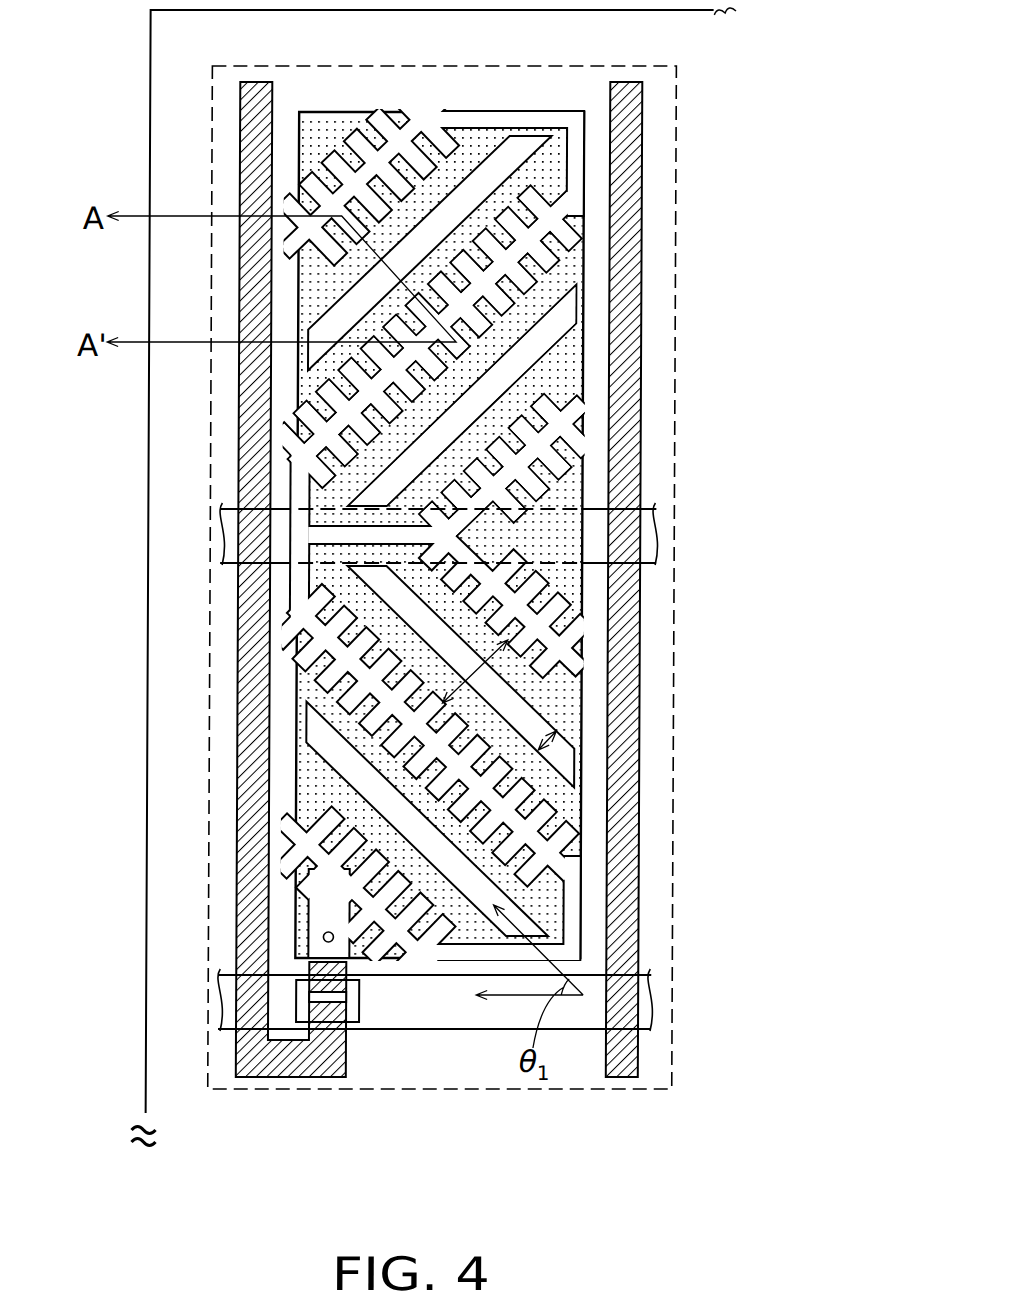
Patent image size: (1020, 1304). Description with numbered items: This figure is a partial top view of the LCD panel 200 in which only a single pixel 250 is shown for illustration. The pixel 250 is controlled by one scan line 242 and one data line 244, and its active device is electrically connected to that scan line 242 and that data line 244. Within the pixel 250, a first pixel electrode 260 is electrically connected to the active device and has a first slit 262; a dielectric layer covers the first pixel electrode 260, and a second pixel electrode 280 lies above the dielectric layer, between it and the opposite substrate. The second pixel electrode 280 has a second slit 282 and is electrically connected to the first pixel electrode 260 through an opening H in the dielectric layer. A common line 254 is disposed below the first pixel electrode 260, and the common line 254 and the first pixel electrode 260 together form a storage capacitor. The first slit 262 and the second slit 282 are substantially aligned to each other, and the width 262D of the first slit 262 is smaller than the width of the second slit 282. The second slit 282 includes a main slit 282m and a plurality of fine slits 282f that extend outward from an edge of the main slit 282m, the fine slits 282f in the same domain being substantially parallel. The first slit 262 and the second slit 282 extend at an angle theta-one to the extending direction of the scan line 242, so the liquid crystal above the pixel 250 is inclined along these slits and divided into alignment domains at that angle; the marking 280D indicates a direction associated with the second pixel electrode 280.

The LCD panel 200 is at (770, 1163).
The scan line 242 is at (657, 1012).
The data line 244 is at (243, 100).
The pixel 250 is at (676, 97).
The common line 254 is at (662, 536).
The first pixel electrode 260 is at (568, 362).
The first slit 262 is at (563, 322).
The second pixel electrode 280 is at (560, 212).
The second slit 282 is at (783, 660).
The fine slits 282f is at (548, 668).
The main slit 282m is at (539, 690).
The extending direction of common electrode 280D is at (558, 734).
The width of the first slit 262D is at (562, 750).
The opening H is at (315, 932).